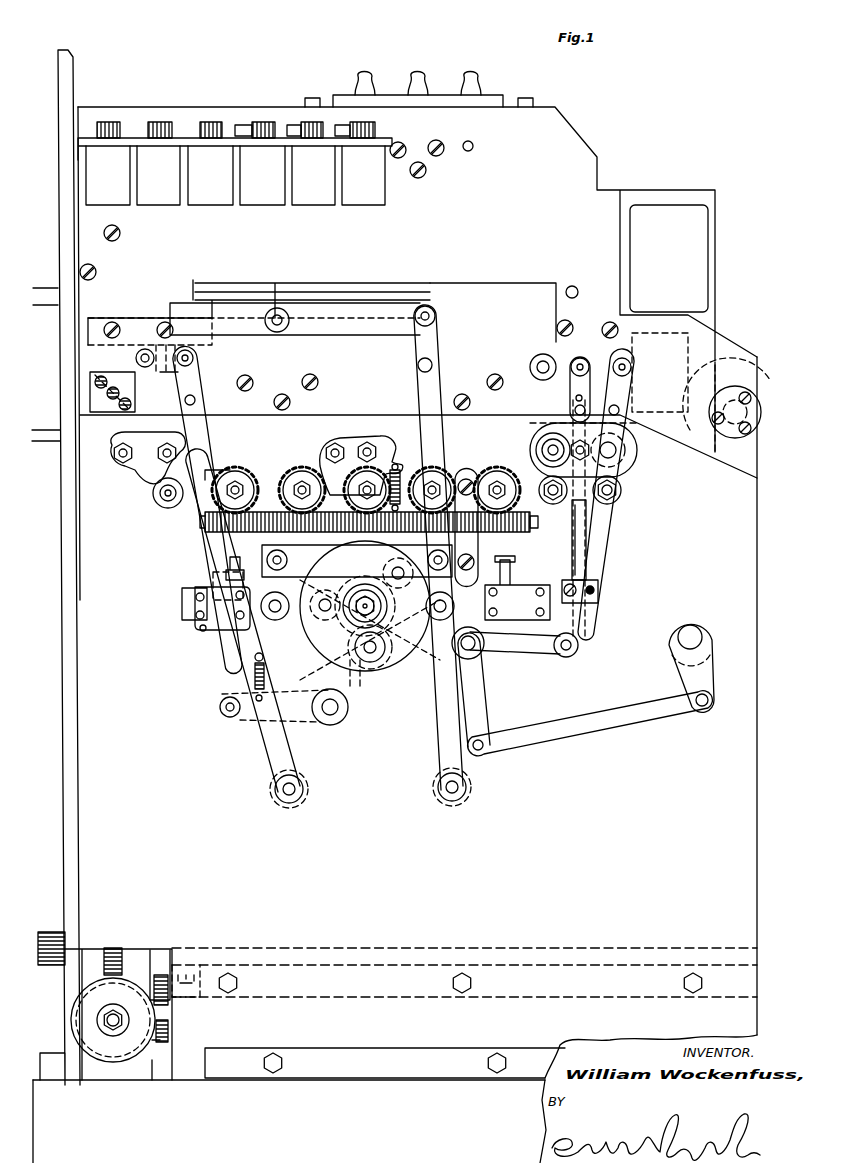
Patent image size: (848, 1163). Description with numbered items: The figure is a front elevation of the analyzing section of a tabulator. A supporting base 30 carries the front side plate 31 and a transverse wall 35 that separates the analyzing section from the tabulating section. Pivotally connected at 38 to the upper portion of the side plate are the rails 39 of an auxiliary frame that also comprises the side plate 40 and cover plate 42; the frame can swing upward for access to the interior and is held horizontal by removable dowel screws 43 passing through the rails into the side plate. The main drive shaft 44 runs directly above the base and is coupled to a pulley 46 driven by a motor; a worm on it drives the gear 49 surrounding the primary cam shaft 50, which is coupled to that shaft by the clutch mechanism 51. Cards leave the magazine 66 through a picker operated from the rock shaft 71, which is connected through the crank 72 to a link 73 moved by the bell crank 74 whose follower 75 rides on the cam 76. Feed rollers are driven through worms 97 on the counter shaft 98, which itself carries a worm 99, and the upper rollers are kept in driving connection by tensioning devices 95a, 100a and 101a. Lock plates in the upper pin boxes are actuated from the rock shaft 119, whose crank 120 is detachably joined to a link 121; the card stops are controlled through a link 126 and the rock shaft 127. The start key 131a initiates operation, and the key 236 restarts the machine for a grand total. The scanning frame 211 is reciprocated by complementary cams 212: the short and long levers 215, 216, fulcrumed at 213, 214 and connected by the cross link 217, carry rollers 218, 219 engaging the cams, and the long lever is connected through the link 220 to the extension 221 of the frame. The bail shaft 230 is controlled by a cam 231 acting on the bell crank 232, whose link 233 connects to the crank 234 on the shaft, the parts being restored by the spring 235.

The supporting base 30 is at (352, 1090).
The front side plate 31 is at (757, 706).
The transverse wall 35 is at (64, 674).
The pivotal connection 38 is at (745, 418).
The rails 39 is at (236, 416).
The side plate of auxiliary frame 40 is at (568, 143).
The cover plate 42 is at (265, 122).
The dowel screws 43 is at (104, 413).
The main drive shaft 44 is at (98, 1016).
The pulley 46 is at (140, 1056).
The gear 49 is at (114, 948).
The primary cam shaft 50 is at (50, 932).
The clutch mechanism 51 is at (144, 950).
The magazine 66 is at (712, 261).
The rock shaft 71 is at (690, 624).
The crank 72 is at (714, 664).
The link 73 is at (620, 735).
The bell crank 74 is at (486, 690).
The follower 75 is at (380, 682).
The cam 76 is at (364, 556).
The tensioning device 95a is at (592, 612).
The worms 97 is at (510, 534).
The counter shaft 98 is at (538, 522).
The worm 99 is at (348, 488).
The tensioning device 100a is at (350, 438).
The tensioning device 101a is at (150, 470).
The rock shaft 119 is at (582, 358).
The crank 120 is at (612, 358).
The link 121 is at (600, 526).
The link 126 is at (592, 556).
The rock shaft 127 is at (536, 356).
The start key 131a is at (157, 122).
The frame 211 is at (350, 285).
The complementary cams 212 is at (358, 690).
The fulcrum 213 is at (274, 786).
The fulcrum 214 is at (436, 786).
The short lever 215 is at (278, 745).
The long lever 216 is at (438, 727).
The cross link 217 is at (326, 580).
The roller 218 is at (268, 632).
The roller 219 is at (450, 580).
The link 220 is at (350, 338).
The extension 221 is at (265, 325).
The shaft 230 is at (136, 358).
The cam 231 is at (398, 652).
The bell crank 232 is at (312, 728).
The link 233 is at (232, 653).
The crank 234 is at (162, 373).
The spring 235 is at (252, 682).
The key 236 is at (212, 122).